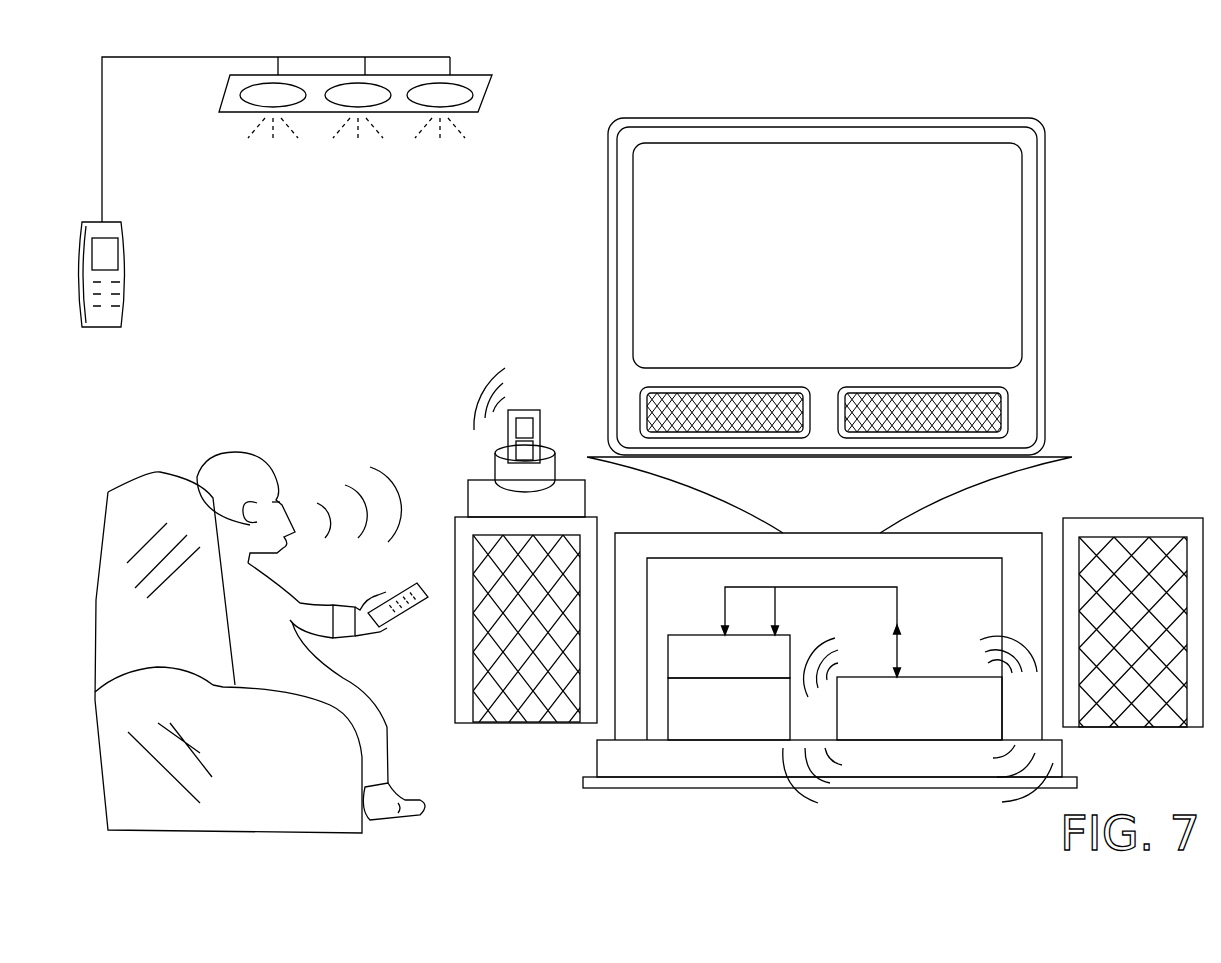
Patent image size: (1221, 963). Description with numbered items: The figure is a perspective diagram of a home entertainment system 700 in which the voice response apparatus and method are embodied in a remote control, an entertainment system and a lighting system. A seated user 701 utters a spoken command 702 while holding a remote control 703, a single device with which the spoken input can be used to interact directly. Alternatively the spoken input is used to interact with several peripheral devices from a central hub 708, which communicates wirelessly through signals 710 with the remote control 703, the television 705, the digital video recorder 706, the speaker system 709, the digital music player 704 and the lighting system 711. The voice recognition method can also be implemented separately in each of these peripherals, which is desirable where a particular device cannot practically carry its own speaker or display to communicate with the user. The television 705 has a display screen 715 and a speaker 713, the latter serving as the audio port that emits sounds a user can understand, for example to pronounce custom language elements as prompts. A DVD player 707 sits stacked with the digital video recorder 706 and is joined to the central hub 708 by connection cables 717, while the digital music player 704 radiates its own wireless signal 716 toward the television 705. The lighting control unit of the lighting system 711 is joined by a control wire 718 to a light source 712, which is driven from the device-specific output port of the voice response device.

The home entertainment system 700 is at (975, 76).
The user 701 is at (217, 435).
The voice command 702 is at (395, 456).
The remote control 703 is at (402, 632).
The digital music player 704 is at (535, 410).
The television 705 is at (838, 269).
The digital video recorder (DVR) 706 is at (729, 656).
The DVD player 707 is at (729, 709).
The central hub 708 is at (920, 688).
The speaker system 709 is at (1133, 595).
The signals 710 is at (772, 809).
The lighting system 711 is at (167, 262).
The light source 712 is at (484, 76).
The speaker 713 is at (1020, 428).
The display screen 715 is at (983, 195).
The wireless signal 716 is at (496, 388).
The connection cables 717 is at (898, 611).
The control wire 718 is at (238, 51).